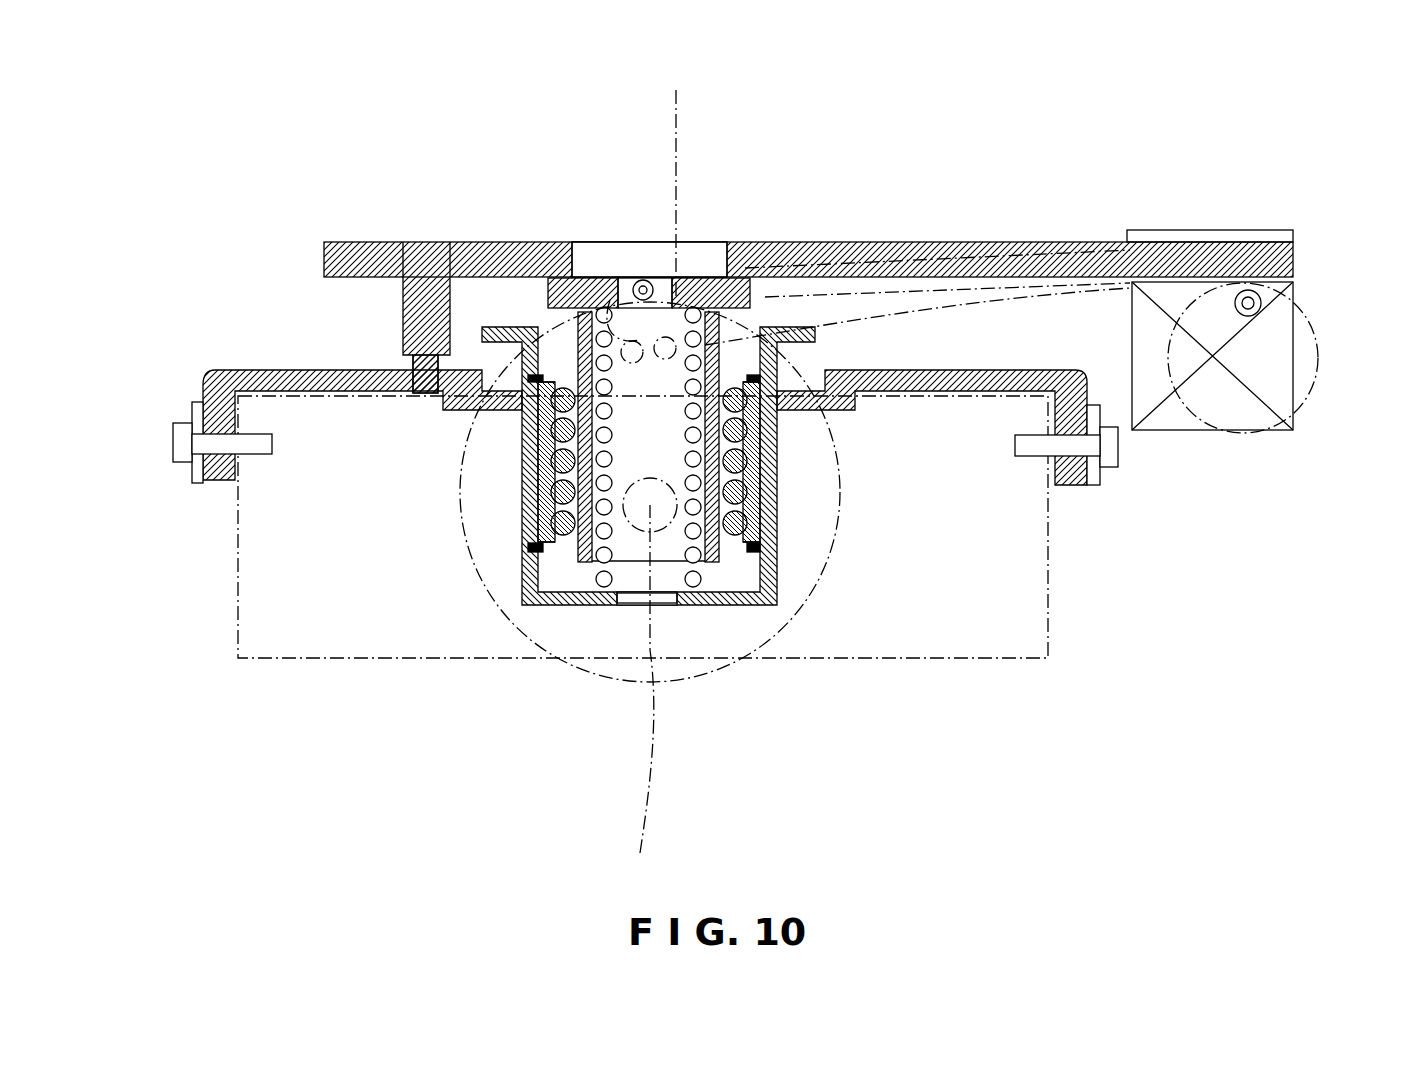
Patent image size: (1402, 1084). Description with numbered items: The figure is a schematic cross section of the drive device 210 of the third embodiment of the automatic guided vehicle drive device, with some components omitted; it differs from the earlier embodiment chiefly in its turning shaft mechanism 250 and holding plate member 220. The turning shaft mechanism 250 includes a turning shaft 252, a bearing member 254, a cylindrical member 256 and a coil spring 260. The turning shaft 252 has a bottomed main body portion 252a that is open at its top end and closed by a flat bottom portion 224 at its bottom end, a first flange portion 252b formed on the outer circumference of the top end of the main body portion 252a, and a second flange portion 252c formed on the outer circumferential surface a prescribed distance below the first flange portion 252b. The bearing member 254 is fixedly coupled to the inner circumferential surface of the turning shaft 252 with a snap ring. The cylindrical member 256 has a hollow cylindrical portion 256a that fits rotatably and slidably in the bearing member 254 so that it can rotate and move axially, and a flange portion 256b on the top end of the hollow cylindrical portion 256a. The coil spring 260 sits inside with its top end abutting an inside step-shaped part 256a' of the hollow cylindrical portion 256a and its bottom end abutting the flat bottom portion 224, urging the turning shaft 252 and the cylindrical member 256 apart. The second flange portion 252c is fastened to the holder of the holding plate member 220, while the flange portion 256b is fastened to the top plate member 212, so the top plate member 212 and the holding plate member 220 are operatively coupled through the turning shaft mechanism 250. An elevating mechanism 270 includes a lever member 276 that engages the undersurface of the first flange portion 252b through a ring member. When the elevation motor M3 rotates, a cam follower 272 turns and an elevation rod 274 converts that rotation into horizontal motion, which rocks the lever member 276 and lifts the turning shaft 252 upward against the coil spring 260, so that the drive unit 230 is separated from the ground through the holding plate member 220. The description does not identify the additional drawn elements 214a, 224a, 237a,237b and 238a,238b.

The drive device 210 is at (1062, 178).
The top plate member 212 is at (362, 242).
The opening 214a is at (712, 242).
The holding plate member 220 is at (300, 370).
The flat bottom portion 224 is at (577, 605).
The bottom opening 224a is at (660, 605).
The drive unit 230 is at (1066, 666).
The shaft axis 237a,237b is at (658, 691).
The rotation circle 238a,238b is at (745, 655).
The turning shaft mechanism 250 is at (803, 507).
The turning shaft 252 is at (357, 477).
The bottomed main body portion 252a is at (548, 500).
The first flange portion 252b is at (488, 340).
The second flange portion 252c is at (503, 410).
The bearing member 254 is at (778, 503).
The cylindrical member 256 is at (990, 168).
The hollow cylindrical portion 256a is at (823, 243).
The inside step-shaped part 256a' is at (610, 242).
The flange portion 256b is at (823, 242).
The coil spring 260 is at (698, 575).
The elevating mechanism 270 is at (1215, 468).
The cam follower 272 is at (1313, 312).
The elevation rod 274 is at (985, 240).
The lever member 276 is at (670, 178).
The elevation motor M3 is at (1205, 430).